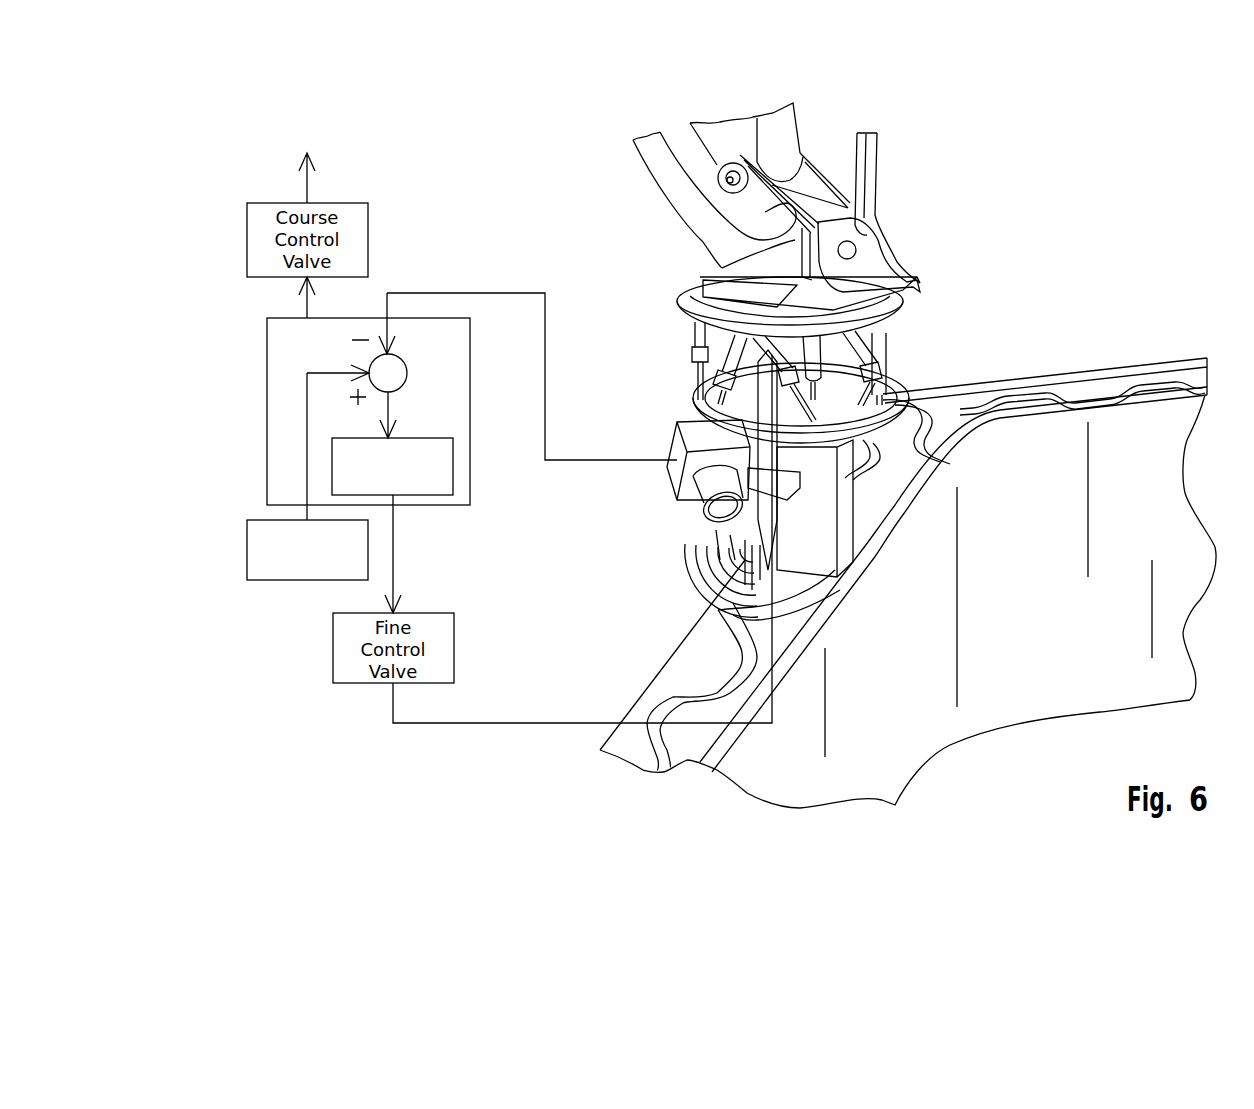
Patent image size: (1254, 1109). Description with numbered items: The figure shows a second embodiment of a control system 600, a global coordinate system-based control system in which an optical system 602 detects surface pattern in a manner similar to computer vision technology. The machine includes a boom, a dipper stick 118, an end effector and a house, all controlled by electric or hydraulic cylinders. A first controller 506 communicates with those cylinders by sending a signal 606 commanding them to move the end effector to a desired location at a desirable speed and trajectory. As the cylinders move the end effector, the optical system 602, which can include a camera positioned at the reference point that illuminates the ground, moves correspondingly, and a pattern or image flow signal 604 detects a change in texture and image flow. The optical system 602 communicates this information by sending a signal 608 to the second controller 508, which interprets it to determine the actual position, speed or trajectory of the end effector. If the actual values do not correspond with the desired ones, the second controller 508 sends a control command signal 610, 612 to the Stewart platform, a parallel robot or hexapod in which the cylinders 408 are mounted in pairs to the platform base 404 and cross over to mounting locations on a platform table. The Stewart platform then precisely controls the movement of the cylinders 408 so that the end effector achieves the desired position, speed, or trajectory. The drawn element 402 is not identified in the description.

The dipper stick 118 is at (803, 100).
The control system 600 is at (1013, 172).
The fine positioning device 402 is at (907, 347).
The platform base 404 is at (677, 287).
The cylinders 408 is at (883, 362).
The optical system 602 is at (670, 425).
The pattern or image flow signal 604 is at (697, 592).
The signal 606 is at (307, 455).
The signal 608 is at (465, 293).
The control command signal 610 is at (395, 545).
The control command signal 612 is at (507, 725).
The first controller 506 is at (331, 566).
The second controller 508 is at (416, 484).